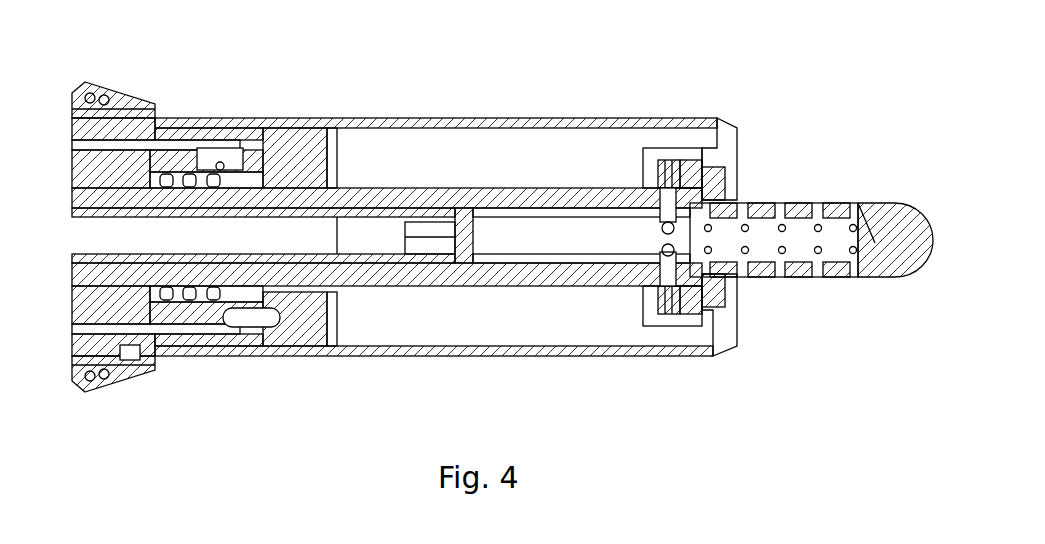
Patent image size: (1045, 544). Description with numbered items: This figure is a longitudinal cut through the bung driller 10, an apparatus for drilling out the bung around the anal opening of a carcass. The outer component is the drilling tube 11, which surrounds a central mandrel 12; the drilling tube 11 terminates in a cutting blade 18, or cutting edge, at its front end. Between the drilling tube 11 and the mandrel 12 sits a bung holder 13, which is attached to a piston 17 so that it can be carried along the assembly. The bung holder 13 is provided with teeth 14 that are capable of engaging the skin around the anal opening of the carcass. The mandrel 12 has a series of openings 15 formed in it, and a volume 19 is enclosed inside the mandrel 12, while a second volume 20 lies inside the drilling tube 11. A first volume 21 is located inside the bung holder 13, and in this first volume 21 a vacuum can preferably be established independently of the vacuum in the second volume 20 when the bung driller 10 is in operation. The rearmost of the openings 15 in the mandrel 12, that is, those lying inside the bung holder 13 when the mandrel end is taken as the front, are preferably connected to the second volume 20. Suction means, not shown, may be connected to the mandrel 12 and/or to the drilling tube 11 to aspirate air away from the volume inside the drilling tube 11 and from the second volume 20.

The bung driller 10 is at (806, 73).
The drilling tube 11 is at (395, 127).
The mandrel 12 is at (840, 204).
The bung holder 13 is at (673, 162).
The teeth 14 is at (737, 287).
The openings 15 is at (820, 254).
The piston 17 is at (498, 197).
The cutting blade 18 is at (737, 343).
The volume 19 is at (577, 237).
The second volume 20 is at (430, 313).
The first volume 21 is at (727, 181).